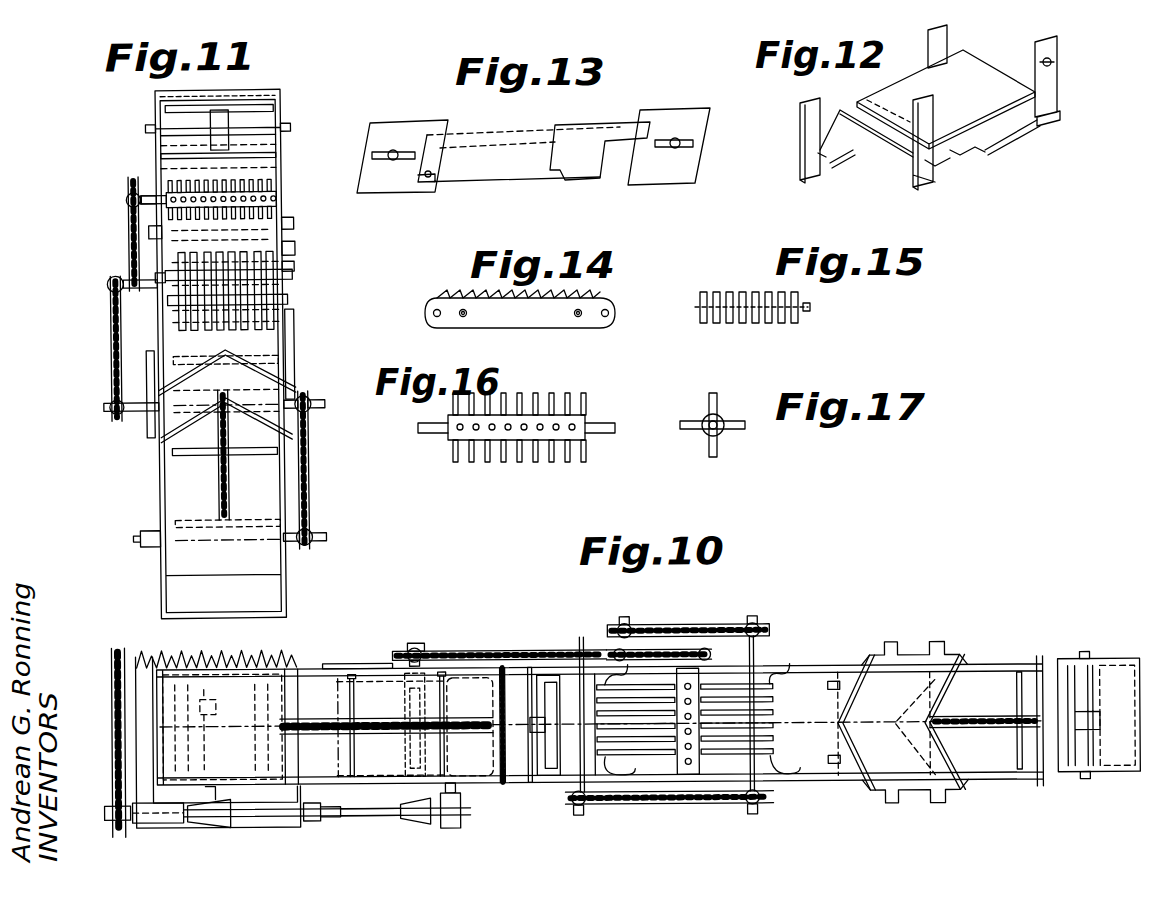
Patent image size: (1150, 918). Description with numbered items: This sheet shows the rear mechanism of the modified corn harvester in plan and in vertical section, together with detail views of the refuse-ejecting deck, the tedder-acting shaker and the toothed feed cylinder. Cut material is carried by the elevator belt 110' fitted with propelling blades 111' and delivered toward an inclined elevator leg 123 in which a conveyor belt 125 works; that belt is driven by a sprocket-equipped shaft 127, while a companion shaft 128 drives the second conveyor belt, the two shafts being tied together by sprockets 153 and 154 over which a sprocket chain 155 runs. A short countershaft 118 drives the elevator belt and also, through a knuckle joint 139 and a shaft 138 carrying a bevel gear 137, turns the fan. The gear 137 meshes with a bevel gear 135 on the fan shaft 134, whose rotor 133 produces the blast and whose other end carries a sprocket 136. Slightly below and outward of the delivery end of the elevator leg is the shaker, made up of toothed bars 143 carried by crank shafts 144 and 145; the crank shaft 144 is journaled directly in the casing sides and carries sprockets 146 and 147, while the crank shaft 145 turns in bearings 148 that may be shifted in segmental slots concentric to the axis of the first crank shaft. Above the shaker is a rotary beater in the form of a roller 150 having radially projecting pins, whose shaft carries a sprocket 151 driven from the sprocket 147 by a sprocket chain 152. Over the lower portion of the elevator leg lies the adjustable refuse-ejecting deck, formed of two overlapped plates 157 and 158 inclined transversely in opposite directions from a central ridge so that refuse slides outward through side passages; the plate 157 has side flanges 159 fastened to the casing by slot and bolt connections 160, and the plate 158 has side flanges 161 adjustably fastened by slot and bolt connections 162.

In FIG. 10, the elevator belt 110' is at (483, 692).
In FIG. 10, the propelling blades 111' is at (452, 677).
In FIG. 10, the countershaft 118 is at (248, 822).
In FIG. 11, the inclined elevator leg 123 is at (158, 567).
In FIG. 10, the inclined elevator leg 123 is at (1030, 668).
In FIG. 11, the conveyor belt 125 is at (228, 478).
In FIG. 10, the conveyor belt 125 is at (975, 725).
In FIG. 11, the sprocket-equipped shaft 127 is at (314, 408).
In FIG. 10, the sprocket-equipped shaft 127 is at (765, 808).
In FIG. 11, the sprocket-equipped shaft 128 is at (320, 538).
In FIG. 10, the sprocket-equipped shaft 128 is at (590, 808).
In FIG. 10, the fan head or rotor 133 is at (378, 662).
In FIG. 10, the fan shaft 134 is at (415, 645).
In FIG. 10, the bevel gear 135 is at (452, 806).
In FIG. 10, the sprocket 136 is at (428, 650).
In FIG. 10, the bevel gear 137 is at (405, 818).
In FIG. 10, the shaft 138 is at (365, 818).
In FIG. 10, the knuckle joint 139 is at (318, 822).
In FIG. 11, the toothed bars 143 is at (292, 270).
In FIG. 14, the toothed bars 143 is at (560, 318).
In FIG. 15, the toothed bars 143 is at (718, 290).
In FIG. 10, the toothed bars 143 is at (760, 680).
In FIG. 11, the crank shaft 144 is at (294, 298).
In FIG. 10, the crank shaft 144 is at (606, 680).
In FIG. 11, the crank shaft 145 is at (152, 238).
In FIG. 10, the crank shaft 145 is at (769, 713).
In FIG. 11, the sprocket 146 is at (108, 285).
In FIG. 10, the sprocket 146 is at (628, 632).
In FIG. 11, the sprocket 147 is at (115, 318).
In FIG. 10, the sprocket 147 is at (660, 655).
In FIG. 11, the bearings 148 is at (290, 225).
In FIG. 10, the bearings 148 is at (800, 665).
In FIG. 11, the roller 150 is at (258, 197).
In FIG. 16, the roller 150 is at (560, 420).
In FIG. 17, the roller 150 is at (712, 420).
In FIG. 10, the roller 150 is at (672, 780).
In FIG. 11, the sprocket 151 is at (133, 180).
In FIG. 10, the sprocket 151 is at (715, 675).
In FIG. 11, the sprocket chain 152 is at (128, 224).
In FIG. 10, the sprocket chain 152 is at (740, 633).
In FIG. 11, the sprocket 153 is at (303, 398).
In FIG. 10, the sprocket 153 is at (752, 808).
In FIG. 11, the sprocket 154 is at (308, 534).
In FIG. 10, the sprocket 154 is at (570, 802).
In FIG. 11, the sprocket chain 155 is at (308, 492).
In FIG. 10, the sprocket chain 155 is at (720, 800).
In FIG. 11, the plate 157 is at (268, 363).
In FIG. 13, the plate 157 is at (497, 148).
In FIG. 12, the plate 157 is at (985, 77).
In FIG. 10, the plate 157 is at (950, 680).
In FIG. 11, the plate 158 is at (183, 400).
In FIG. 13, the plate 158 is at (590, 130).
In FIG. 12, the plate 158 is at (860, 112).
In FIG. 11, the side flanges 159 is at (292, 318).
In FIG. 13, the side flanges 159 is at (680, 157).
In FIG. 12, the side flanges 159 is at (1010, 142).
In FIG. 13, the slot and bolt connections 160 is at (677, 138).
In FIG. 12, the slot and bolt connections 160 is at (1050, 60).
In FIG. 11, the side flanges 161 is at (183, 443).
In FIG. 13, the side flanges 161 is at (400, 186).
In FIG. 12, the side flanges 161 is at (918, 180).
In FIG. 13, the slot and bolt connections 162 is at (395, 150).
In FIG. 12, the slot and bolt connections 162 is at (905, 154).